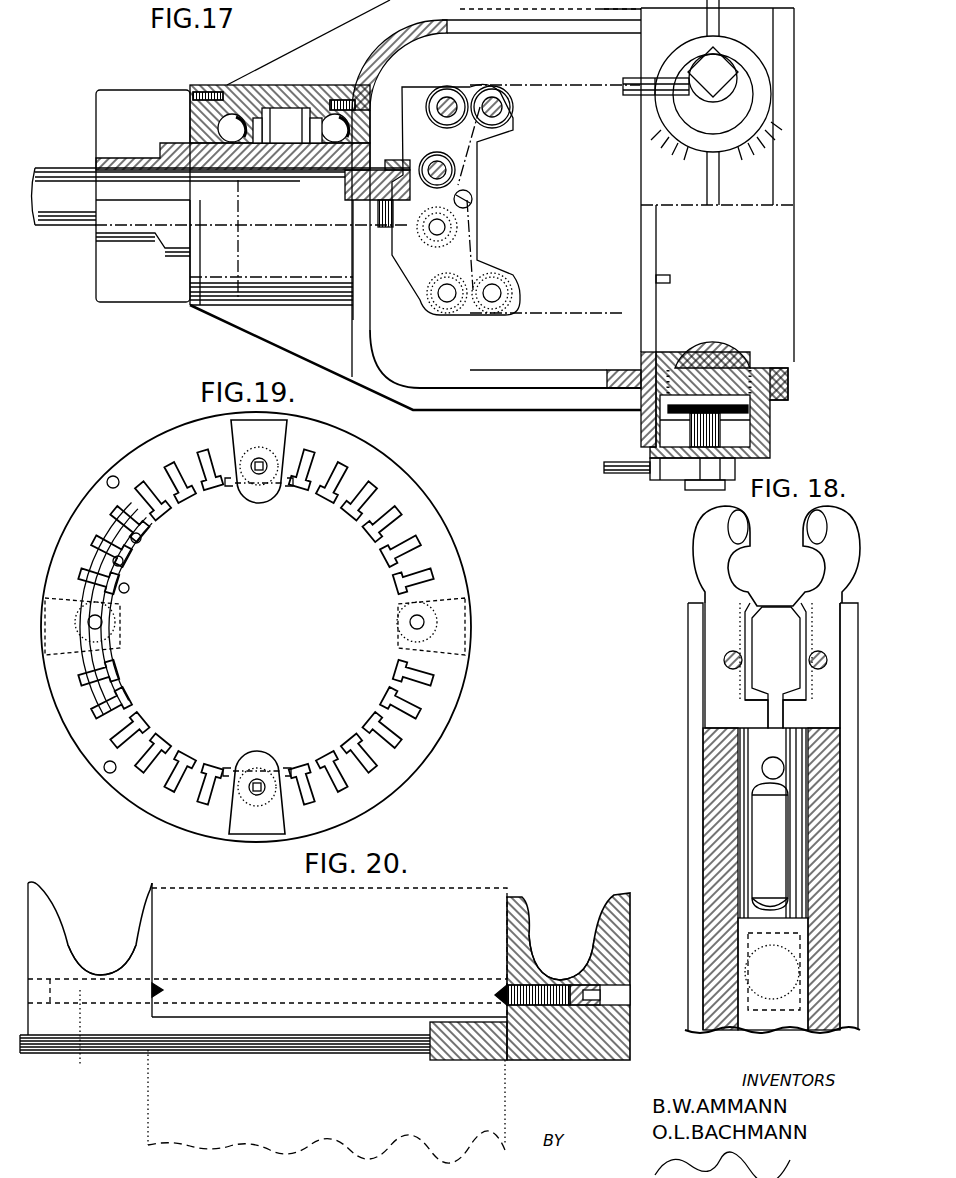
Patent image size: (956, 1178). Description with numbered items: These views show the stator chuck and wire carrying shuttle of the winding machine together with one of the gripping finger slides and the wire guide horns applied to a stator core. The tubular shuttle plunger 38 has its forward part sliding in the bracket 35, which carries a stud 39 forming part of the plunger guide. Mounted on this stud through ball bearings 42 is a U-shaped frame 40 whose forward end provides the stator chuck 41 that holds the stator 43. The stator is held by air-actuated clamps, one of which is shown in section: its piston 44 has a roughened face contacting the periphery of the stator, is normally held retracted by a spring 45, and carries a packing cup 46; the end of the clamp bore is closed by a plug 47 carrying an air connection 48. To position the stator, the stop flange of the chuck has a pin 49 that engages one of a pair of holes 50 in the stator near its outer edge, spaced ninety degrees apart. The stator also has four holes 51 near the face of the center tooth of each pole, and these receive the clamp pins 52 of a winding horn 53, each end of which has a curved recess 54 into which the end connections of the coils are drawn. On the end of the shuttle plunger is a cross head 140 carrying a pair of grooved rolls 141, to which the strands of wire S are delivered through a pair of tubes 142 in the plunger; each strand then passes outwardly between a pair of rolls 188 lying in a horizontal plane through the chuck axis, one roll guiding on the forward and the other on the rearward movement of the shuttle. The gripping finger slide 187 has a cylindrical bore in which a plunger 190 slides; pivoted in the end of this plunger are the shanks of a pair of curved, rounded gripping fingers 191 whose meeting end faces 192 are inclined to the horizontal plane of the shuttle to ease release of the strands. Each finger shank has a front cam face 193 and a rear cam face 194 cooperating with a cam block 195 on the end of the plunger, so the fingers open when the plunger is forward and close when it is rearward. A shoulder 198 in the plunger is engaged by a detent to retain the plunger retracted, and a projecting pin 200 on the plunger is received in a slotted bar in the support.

In FIG. 17, the bracket 35 is at (137, 276).
In FIG. 17, the shuttle plunger 38 is at (73, 188).
In FIG. 17, the stud 39 is at (272, 165).
In FIG. 17, the U-shaped frame 40 is at (372, 345).
In FIG. 17, the stator chuck 41 is at (675, 195).
In FIG. 17, the ball bearings 42 is at (330, 108).
In FIG. 19, the stator 43 is at (418, 507).
In FIG. 20, the stator 43 is at (262, 1099).
In FIG. 17, the piston 44 is at (745, 377).
In FIG. 17, the spring 45 is at (768, 396).
In FIG. 17, the packing cup 46 is at (672, 414).
In FIG. 17, the plug 47 is at (767, 82).
In FIG. 17, the air connection 48 is at (739, 98).
In FIG. 17, the pin 49 is at (667, 283).
In FIG. 19, the holes 50 is at (107, 479).
In FIG. 19, the holes 51 is at (251, 470).
In FIG. 20, the holes 51 is at (440, 995).
In FIG. 20, the clamp pins 52 is at (75, 995).
In FIG. 19, the winding horn 53 is at (268, 440).
In FIG. 20, the winding horn 53 is at (618, 941).
In FIG. 20, the curved recess 54 is at (103, 957).
In FIG. 17, the cross head 140 is at (473, 172).
In FIG. 17, the grooved rolls 141 is at (442, 225).
In FIG. 17, the tubes 142 is at (360, 192).
In FIG. 18, the gripping finger slide 187 is at (722, 815).
In FIG. 17, the rolls 188 is at (492, 86).
In FIG. 18, the plunger 190 is at (748, 842).
In FIG. 18, the gripping fingers 191 is at (707, 567).
In FIG. 18, the meeting end faces 192 is at (817, 520).
In FIG. 18, the front cam face 193 is at (760, 645).
In FIG. 18, the rear cam face 194 is at (764, 697).
In FIG. 18, the cam block 195 is at (769, 636).
In FIG. 18, the shoulder 198 is at (768, 902).
In FIG. 18, the projecting pin 200 is at (765, 770).
In FIG. 17, the strands of wire S is at (573, 88).
In FIG. 19, the strands of wire S is at (102, 584).